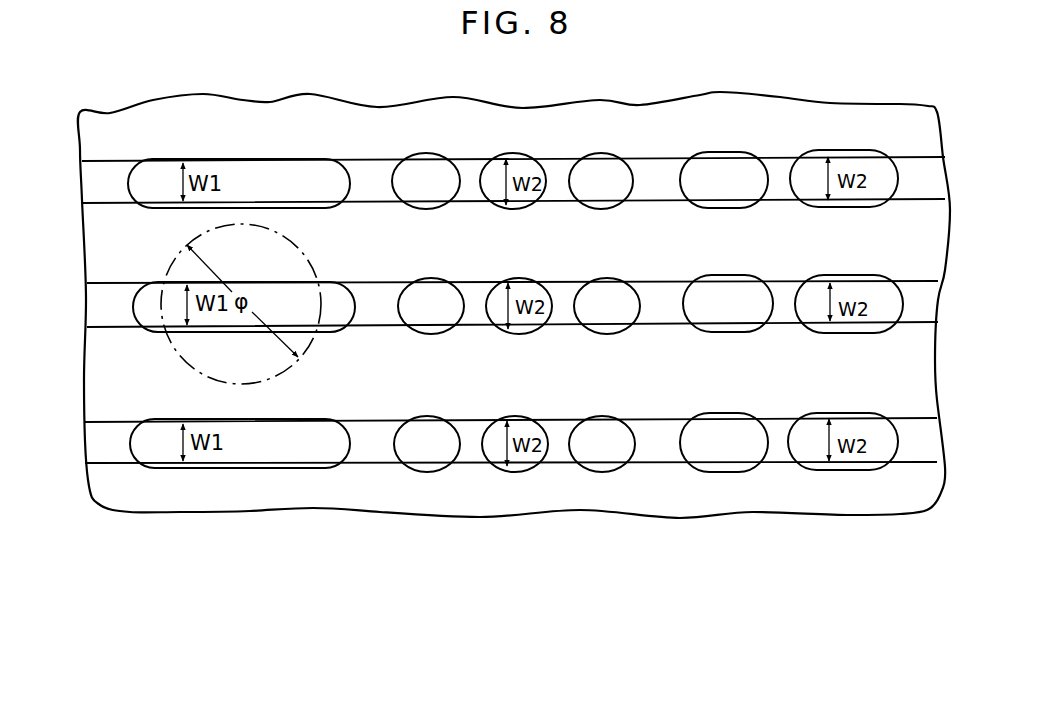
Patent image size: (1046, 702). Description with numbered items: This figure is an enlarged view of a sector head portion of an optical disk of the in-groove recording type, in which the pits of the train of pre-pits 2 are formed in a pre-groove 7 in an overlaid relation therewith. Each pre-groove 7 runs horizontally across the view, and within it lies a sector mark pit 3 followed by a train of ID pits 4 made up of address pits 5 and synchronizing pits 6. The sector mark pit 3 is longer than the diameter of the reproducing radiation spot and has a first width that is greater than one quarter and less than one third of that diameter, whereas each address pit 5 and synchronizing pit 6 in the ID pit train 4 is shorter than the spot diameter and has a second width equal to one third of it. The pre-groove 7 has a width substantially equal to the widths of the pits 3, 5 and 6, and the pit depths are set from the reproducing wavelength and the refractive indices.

The train of pre-pits 2 is at (902, 570).
The sector mark pit 3 is at (297, 168).
The train of ID pits 4 is at (902, 527).
The address pit 5 is at (727, 197).
The synchronizing pit 6 is at (423, 197).
The pre-groove 7 is at (915, 185).